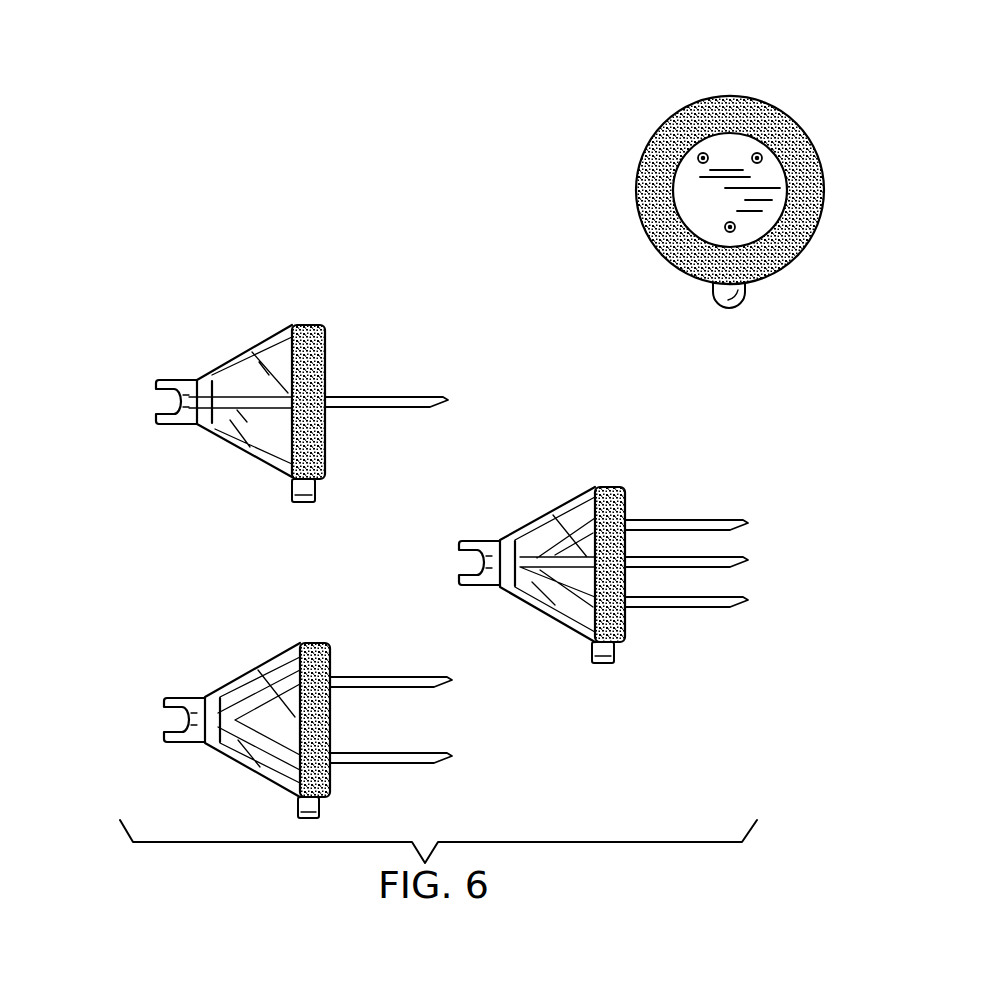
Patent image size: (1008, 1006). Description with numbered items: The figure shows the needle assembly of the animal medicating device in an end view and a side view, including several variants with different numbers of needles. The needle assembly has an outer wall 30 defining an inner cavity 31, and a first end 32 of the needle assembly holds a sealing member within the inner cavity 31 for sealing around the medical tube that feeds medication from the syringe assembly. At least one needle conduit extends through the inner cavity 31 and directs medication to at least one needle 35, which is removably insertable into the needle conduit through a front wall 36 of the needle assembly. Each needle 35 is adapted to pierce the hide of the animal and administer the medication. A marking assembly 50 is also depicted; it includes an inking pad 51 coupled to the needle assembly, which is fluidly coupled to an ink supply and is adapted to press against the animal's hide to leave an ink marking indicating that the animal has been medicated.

In FIG. 6, the outer wall 30 is at (284, 344).
In FIG. 6, the inner cavity 31 is at (194, 343).
In FIG. 6, the first end 32 is at (115, 379).
In FIG. 5, the needle 35 is at (762, 156).
In FIG. 6, the front wall 36 is at (668, 544).
In FIG. 5, the marking assembly 50 is at (784, 196).
In FIG. 5, the inking pad 51 is at (827, 192).